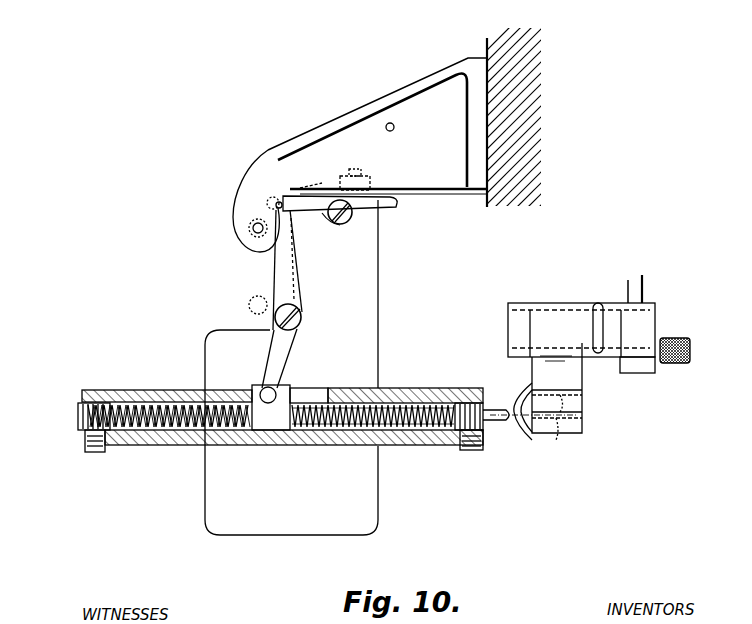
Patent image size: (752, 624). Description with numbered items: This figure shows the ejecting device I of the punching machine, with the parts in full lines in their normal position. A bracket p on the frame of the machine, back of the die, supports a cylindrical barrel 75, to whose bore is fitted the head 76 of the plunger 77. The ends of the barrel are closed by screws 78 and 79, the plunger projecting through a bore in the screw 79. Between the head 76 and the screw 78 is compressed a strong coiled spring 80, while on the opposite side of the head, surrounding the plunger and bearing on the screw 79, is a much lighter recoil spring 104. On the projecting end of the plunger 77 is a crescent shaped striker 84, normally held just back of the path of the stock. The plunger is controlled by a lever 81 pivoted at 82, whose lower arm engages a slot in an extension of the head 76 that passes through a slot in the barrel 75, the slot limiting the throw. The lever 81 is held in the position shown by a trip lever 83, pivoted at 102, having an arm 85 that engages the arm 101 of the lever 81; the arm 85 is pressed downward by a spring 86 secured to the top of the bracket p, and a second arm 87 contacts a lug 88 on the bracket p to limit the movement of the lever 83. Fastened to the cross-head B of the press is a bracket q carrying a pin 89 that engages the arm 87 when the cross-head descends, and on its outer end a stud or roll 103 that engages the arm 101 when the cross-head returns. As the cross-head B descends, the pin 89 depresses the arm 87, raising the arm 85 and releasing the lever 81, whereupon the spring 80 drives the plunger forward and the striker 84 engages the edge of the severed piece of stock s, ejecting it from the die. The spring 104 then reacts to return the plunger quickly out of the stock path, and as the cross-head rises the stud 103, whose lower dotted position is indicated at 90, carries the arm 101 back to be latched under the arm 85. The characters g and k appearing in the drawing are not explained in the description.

The cross-head B is at (523, 129).
The ejecting device I is at (126, 322).
The bracket q is at (250, 181).
The bracket p is at (379, 349).
The slide g is at (577, 383).
The piece of severed stock s is at (565, 408).
The key k is at (578, 432).
The cylindrical barrel 75 is at (300, 446).
The head 76 is at (262, 432).
The plunger 77 is at (358, 446).
The screw 78 is at (82, 418).
The screw 79 is at (488, 428).
The coiled spring 80 is at (173, 443).
The lever 81 is at (289, 343).
The pivot 82 is at (303, 312).
The trip lever 83 is at (346, 224).
The crescent shaped striker 84 is at (520, 392).
The arm 85 is at (268, 205).
The spring 86 is at (321, 184).
The second arm 87 is at (393, 204).
The lug 88 is at (372, 189).
The pin 89 is at (395, 127).
The lower position of stud 90 is at (249, 306).
The arm 101 is at (278, 268).
The pivot 102 is at (333, 224).
The stud or roll 103 is at (254, 232).
The recoil spring 104 is at (425, 446).